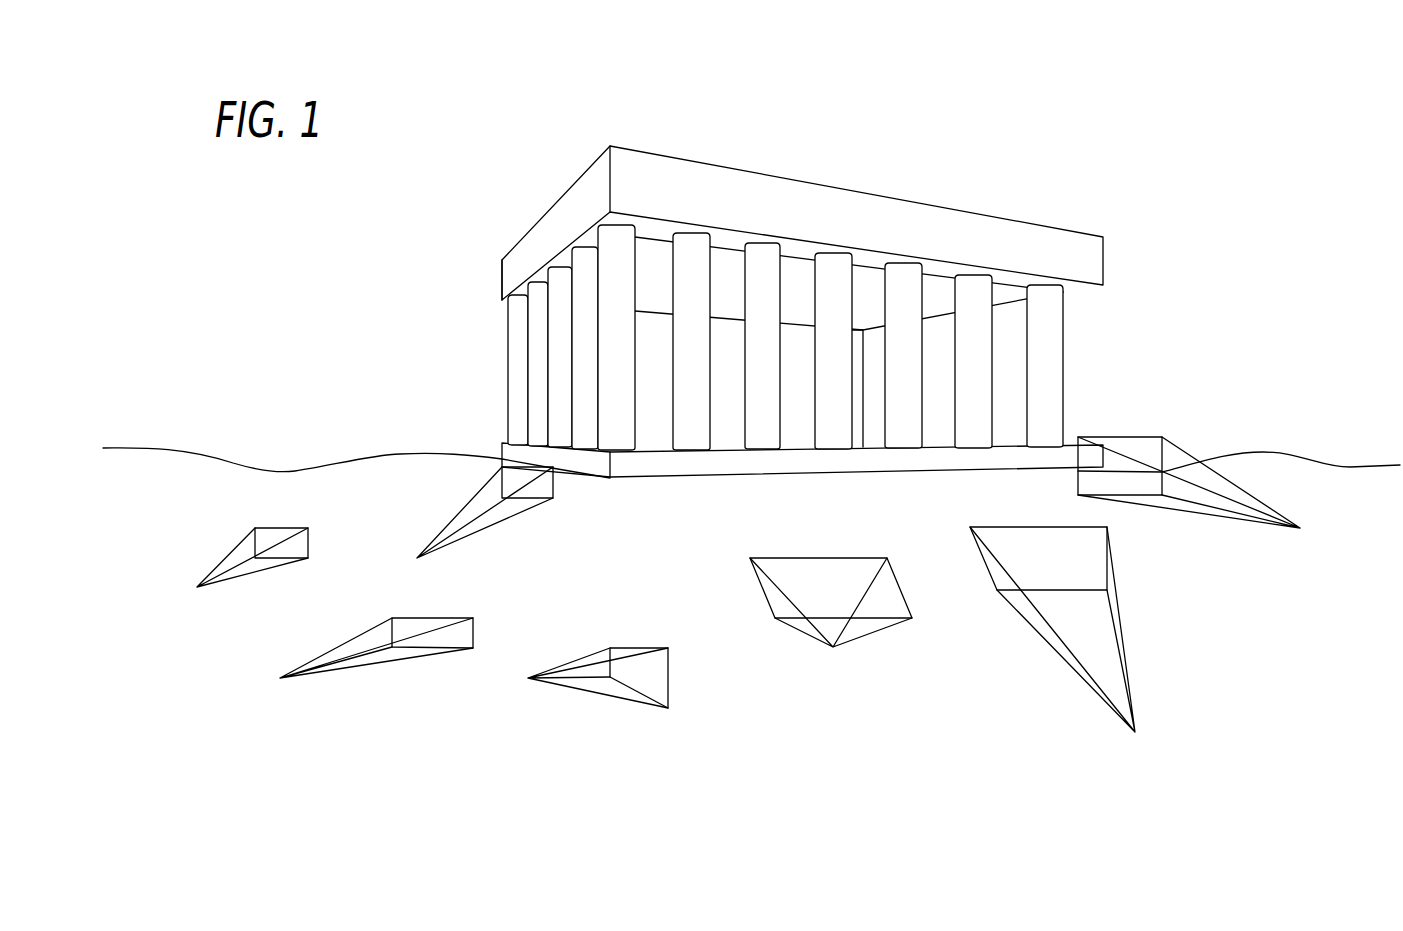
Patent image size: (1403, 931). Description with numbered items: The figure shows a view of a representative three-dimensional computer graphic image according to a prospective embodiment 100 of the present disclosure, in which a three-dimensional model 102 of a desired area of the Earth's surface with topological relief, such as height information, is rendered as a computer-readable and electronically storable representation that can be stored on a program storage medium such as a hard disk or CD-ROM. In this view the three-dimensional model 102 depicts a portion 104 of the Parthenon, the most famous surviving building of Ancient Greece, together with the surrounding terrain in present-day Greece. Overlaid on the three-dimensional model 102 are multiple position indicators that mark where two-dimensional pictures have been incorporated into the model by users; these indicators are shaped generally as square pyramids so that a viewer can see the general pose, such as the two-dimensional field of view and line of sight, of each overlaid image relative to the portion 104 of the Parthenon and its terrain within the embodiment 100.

The embodiment 100 is at (1172, 200).
The 3D model 102 is at (1062, 390).
The portion of the Parthenon 104 is at (517, 272).